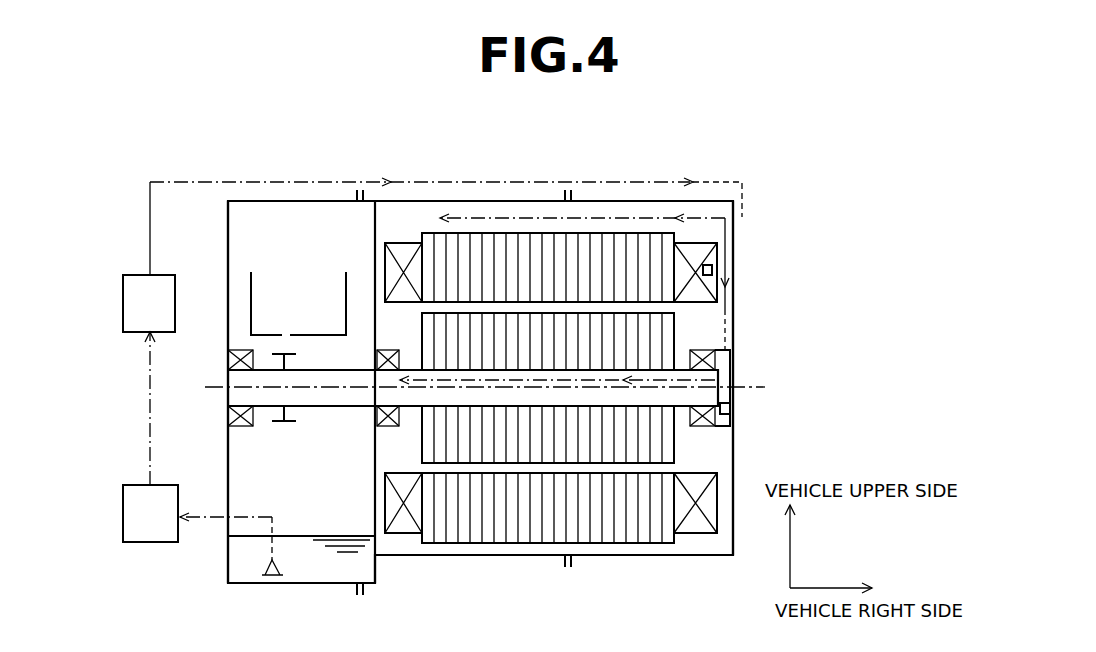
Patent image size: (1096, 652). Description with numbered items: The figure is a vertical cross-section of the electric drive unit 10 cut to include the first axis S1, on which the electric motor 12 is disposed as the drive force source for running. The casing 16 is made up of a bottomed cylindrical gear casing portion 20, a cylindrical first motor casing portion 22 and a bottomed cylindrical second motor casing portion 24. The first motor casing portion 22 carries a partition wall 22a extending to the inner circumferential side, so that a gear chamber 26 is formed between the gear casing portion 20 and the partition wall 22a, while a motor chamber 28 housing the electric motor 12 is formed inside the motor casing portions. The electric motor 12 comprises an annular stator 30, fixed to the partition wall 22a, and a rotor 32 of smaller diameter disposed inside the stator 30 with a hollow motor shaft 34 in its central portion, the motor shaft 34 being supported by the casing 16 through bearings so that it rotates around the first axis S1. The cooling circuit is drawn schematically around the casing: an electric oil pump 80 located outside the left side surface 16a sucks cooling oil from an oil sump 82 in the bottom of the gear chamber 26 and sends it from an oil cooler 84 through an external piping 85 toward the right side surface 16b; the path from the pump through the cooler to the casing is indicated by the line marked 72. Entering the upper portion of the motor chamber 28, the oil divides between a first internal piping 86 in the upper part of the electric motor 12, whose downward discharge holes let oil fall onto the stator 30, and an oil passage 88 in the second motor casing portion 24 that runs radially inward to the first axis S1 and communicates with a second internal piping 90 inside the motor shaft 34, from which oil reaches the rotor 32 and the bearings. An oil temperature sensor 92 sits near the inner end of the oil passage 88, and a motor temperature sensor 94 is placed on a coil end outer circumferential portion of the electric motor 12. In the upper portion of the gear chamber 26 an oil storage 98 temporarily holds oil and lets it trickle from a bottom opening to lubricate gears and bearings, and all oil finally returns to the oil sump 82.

The electric drive unit 10 is at (620, 152).
The electric motor 12 is at (503, 230).
The casing 16 is at (643, 571).
The left side surface 16a is at (228, 243).
The right side surface 16b is at (733, 250).
The gear casing portion 20 is at (275, 201).
The first motor casing portion 22 is at (413, 201).
The partition wall 22a is at (375, 266).
The second motor casing portion 24 is at (636, 201).
The gear chamber 26 is at (268, 221).
The motor chamber 28 is at (398, 221).
The stator 30 is at (585, 245).
The rotor 32 is at (597, 450).
The motor shaft 34 is at (343, 398).
The oil supply passage 72 is at (181, 175).
The electric oil pump 80 is at (123, 527).
The oil sump 82 is at (297, 567).
The oil cooler 84 is at (123, 290).
The external piping 85 is at (325, 182).
The first internal piping 86 is at (540, 218).
The oil passage 88 is at (728, 311).
The second internal piping 90 is at (653, 380).
The oil temperature sensor 92 is at (730, 406).
The motor temperature sensor 94 is at (712, 268).
The oil storage 98 is at (251, 293).
The first axis S1 is at (472, 389).